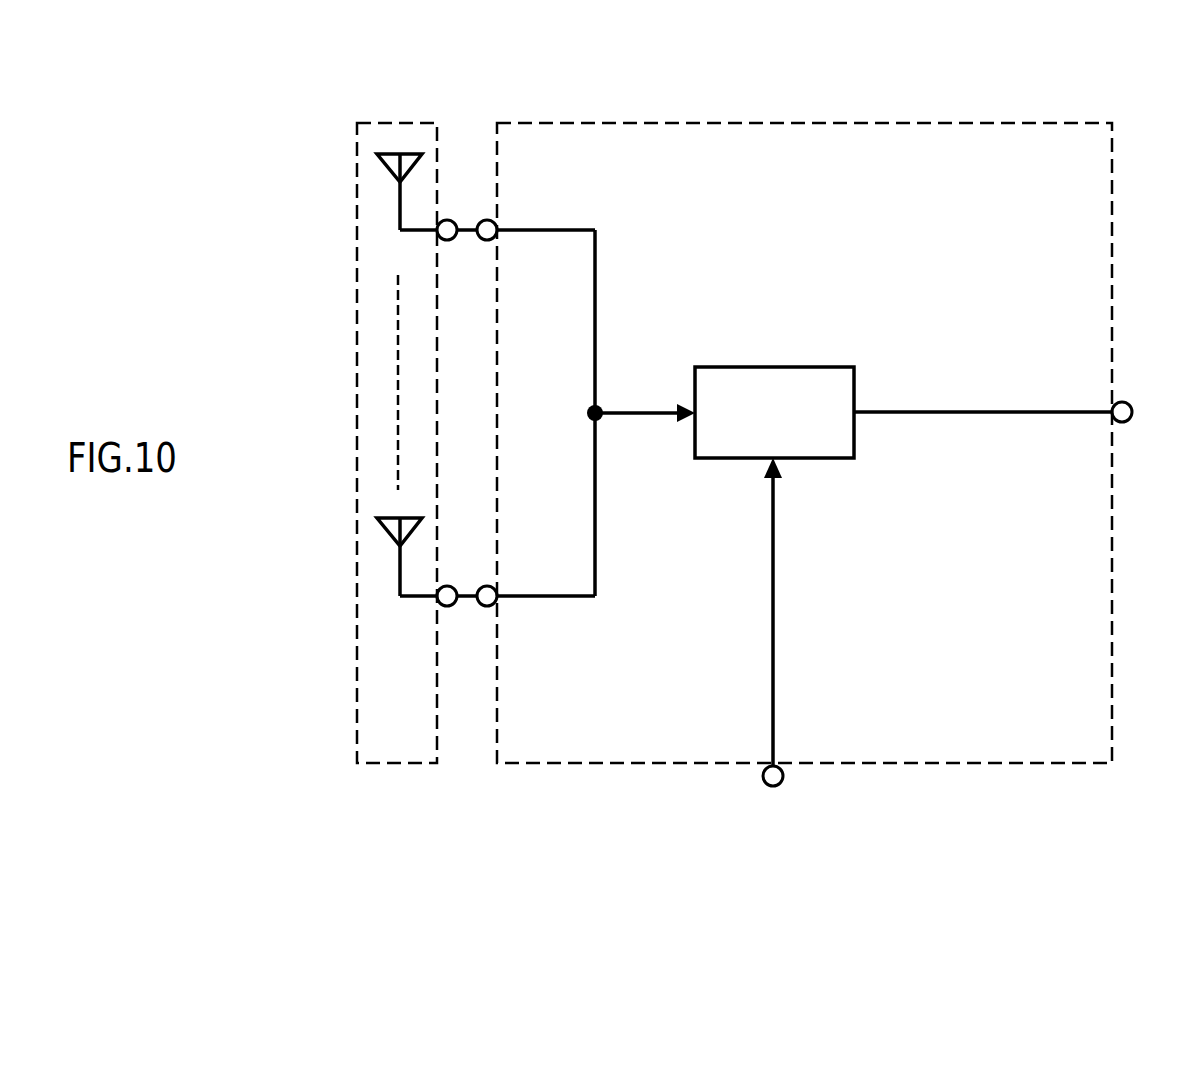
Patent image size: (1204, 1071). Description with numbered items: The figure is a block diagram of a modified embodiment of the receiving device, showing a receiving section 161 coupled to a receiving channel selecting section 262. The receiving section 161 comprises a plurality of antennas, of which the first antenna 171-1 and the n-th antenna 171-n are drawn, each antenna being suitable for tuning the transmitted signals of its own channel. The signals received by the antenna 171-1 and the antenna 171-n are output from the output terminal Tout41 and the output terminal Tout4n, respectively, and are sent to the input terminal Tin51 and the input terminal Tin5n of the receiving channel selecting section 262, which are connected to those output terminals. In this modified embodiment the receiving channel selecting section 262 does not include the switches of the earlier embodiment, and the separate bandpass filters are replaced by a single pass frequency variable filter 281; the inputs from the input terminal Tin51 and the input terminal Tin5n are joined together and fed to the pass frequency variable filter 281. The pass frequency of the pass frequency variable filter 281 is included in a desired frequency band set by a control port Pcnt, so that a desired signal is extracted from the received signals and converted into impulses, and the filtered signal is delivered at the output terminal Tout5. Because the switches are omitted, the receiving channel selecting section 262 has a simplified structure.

The receiving section 161 is at (440, 120).
The receiving channel selecting section 262 is at (691, 120).
The pass frequency variable filter 281 is at (753, 365).
The antenna 171-1 is at (399, 160).
The antenna 171-n is at (387, 535).
The output terminal Tout41 is at (443, 227).
The input terminal Tin51 is at (485, 226).
The output terminal Tout4n is at (446, 604).
The input terminal Tin5n is at (484, 604).
The output terminal Tout5 is at (1127, 417).
The control port Pcnt is at (766, 782).